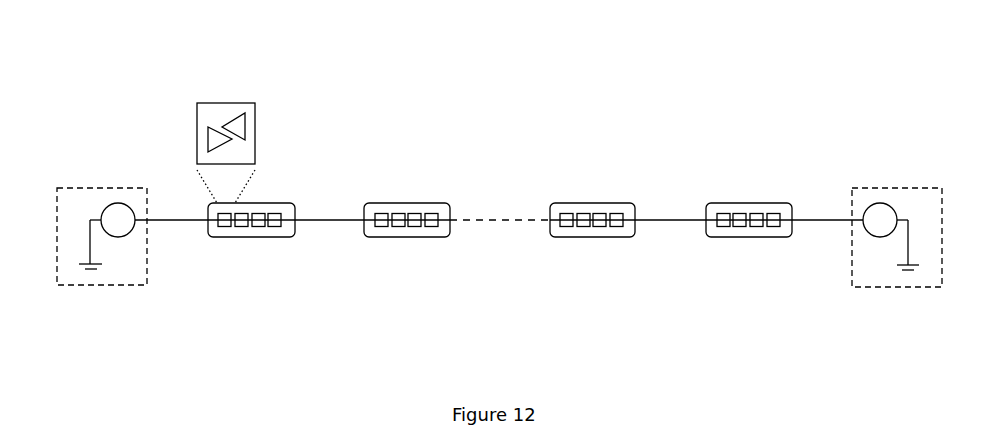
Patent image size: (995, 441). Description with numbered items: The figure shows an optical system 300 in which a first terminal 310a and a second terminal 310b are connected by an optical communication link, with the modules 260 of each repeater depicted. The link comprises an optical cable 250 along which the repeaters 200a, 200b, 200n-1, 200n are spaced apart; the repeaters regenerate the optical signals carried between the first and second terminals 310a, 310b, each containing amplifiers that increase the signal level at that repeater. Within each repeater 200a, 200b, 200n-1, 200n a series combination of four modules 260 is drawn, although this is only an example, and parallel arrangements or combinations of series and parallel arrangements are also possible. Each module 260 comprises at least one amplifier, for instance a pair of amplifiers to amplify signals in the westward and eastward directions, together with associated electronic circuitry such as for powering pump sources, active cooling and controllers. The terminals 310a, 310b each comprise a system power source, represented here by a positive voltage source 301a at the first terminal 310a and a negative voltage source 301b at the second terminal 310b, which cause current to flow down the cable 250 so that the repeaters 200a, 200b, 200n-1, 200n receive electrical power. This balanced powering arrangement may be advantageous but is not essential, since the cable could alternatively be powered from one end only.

The transmission line 250 is at (182, 218).
The module 260 is at (225, 101).
The repeater 200a is at (270, 202).
The repeater 200b is at (417, 201).
The repeater 200n-1 is at (592, 201).
The repeater 200n is at (740, 201).
The optical system 300 is at (737, 72).
The positive voltage source 301a is at (127, 235).
The negative voltage source 301b is at (927, 188).
The first terminal 310a is at (118, 287).
The second terminal 310b is at (872, 235).